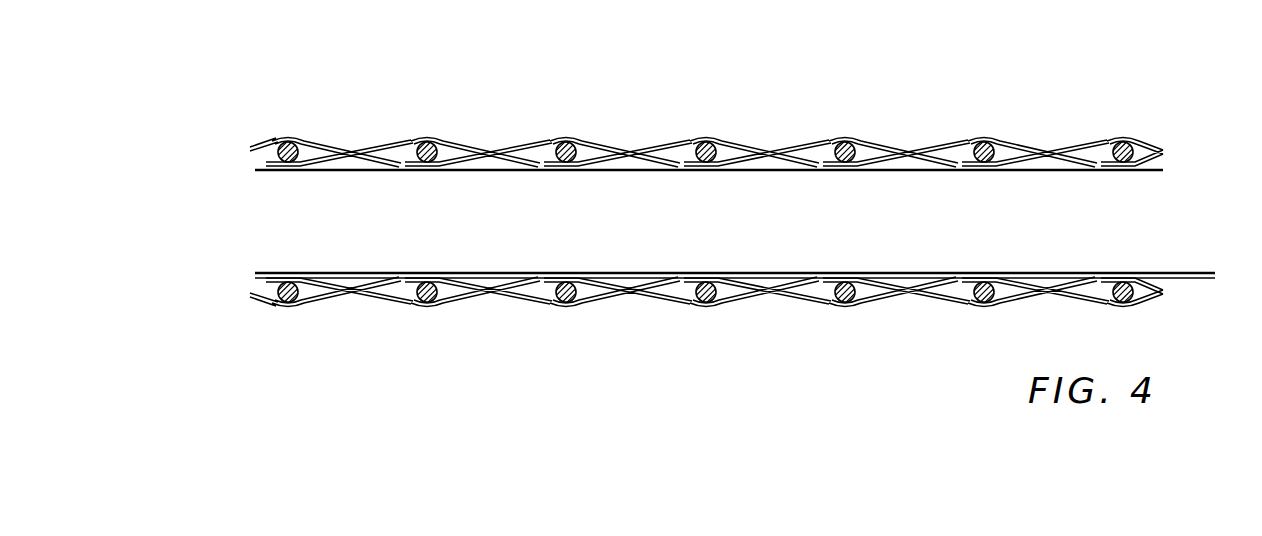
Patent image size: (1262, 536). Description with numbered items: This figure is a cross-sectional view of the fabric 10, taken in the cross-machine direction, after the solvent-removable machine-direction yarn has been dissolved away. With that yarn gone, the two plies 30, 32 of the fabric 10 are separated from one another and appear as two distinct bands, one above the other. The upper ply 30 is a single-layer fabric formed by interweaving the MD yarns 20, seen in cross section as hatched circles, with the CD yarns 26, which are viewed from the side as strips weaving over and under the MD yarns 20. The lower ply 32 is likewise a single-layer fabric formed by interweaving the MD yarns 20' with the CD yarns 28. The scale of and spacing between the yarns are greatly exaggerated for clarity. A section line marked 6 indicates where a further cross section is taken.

The fabric 10 is at (975, 102).
The MD yarns 20 is at (705, 122).
The MD yarns 20' is at (705, 323).
The CD yarns 26 is at (612, 143).
The CD yarns 28 is at (1030, 298).
The ply 30 is at (237, 130).
The ply 32 is at (237, 268).
The section line 6- 6 is at (685, 93).